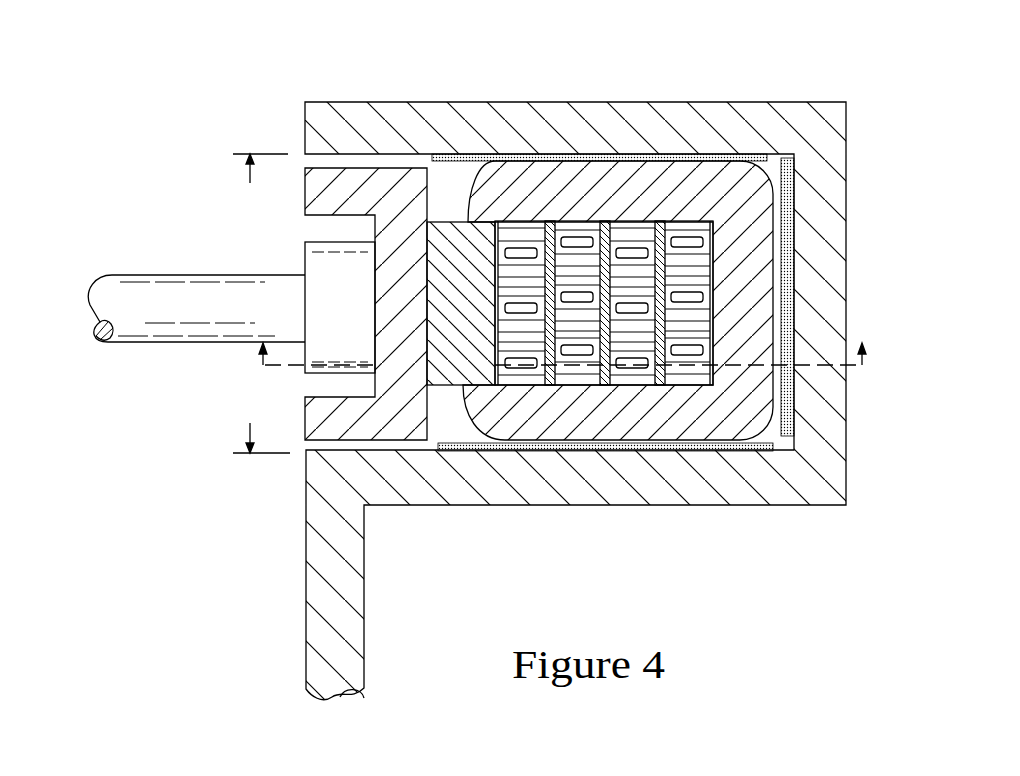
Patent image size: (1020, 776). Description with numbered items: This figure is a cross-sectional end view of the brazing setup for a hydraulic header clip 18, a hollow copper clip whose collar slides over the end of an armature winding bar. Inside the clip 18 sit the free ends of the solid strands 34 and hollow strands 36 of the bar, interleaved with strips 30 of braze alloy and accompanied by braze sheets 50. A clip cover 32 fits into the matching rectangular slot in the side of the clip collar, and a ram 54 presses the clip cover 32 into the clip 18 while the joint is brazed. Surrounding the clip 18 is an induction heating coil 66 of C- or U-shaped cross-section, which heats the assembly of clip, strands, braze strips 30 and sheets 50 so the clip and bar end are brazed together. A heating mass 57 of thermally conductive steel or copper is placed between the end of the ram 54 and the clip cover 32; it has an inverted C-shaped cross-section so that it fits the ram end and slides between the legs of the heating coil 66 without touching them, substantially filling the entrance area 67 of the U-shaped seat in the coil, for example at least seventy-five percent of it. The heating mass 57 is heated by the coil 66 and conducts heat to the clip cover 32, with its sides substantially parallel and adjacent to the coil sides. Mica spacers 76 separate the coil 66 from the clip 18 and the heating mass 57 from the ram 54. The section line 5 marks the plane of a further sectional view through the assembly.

The section line 5- 5 is at (562, 358).
The hydraulic header clip 18 is at (737, 182).
The braze strips 30 is at (552, 385).
The clip cover 32 is at (455, 240).
The solid strands 34 is at (642, 337).
The hollow strands 36 is at (681, 240).
The braze sheets 50 is at (466, 222).
The ram 54 is at (138, 275).
The heating mass 57 is at (305, 205).
The induction heating coil 66 is at (302, 124).
The entrance area 67 is at (250, 176).
The spacers 76 is at (345, 266).